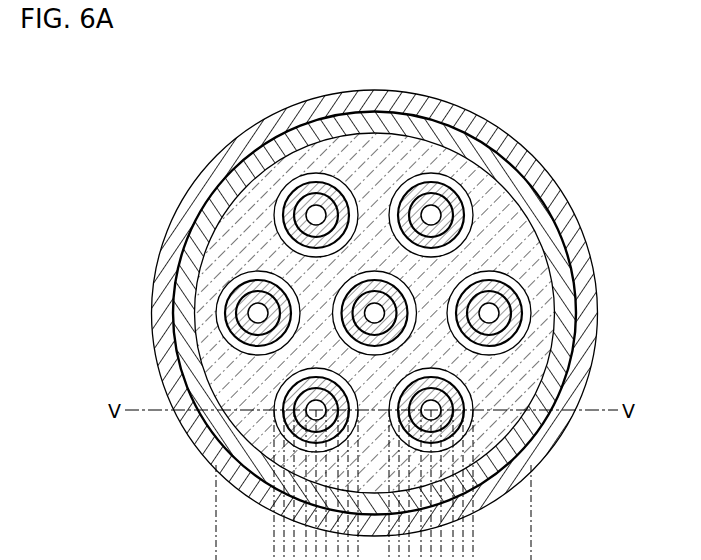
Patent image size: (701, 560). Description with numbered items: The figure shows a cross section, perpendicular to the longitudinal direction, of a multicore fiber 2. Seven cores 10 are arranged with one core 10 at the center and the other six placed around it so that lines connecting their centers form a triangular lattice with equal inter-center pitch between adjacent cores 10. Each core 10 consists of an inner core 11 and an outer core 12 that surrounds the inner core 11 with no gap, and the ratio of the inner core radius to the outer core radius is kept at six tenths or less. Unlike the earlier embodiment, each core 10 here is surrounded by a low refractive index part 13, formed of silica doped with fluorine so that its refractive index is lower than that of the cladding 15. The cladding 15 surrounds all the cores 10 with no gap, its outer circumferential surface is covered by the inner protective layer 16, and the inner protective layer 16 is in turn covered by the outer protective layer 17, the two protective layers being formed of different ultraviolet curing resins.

The multicore fiber 2 is at (547, 79).
The core 10 is at (311, 205).
The inner core 11 is at (492, 312).
The outer core 12 is at (500, 296).
The low refractive index part 13 is at (287, 195).
The cladding 15 is at (507, 240).
The inner protective layer 16 is at (525, 197).
The outer protective layer 17 is at (528, 152).